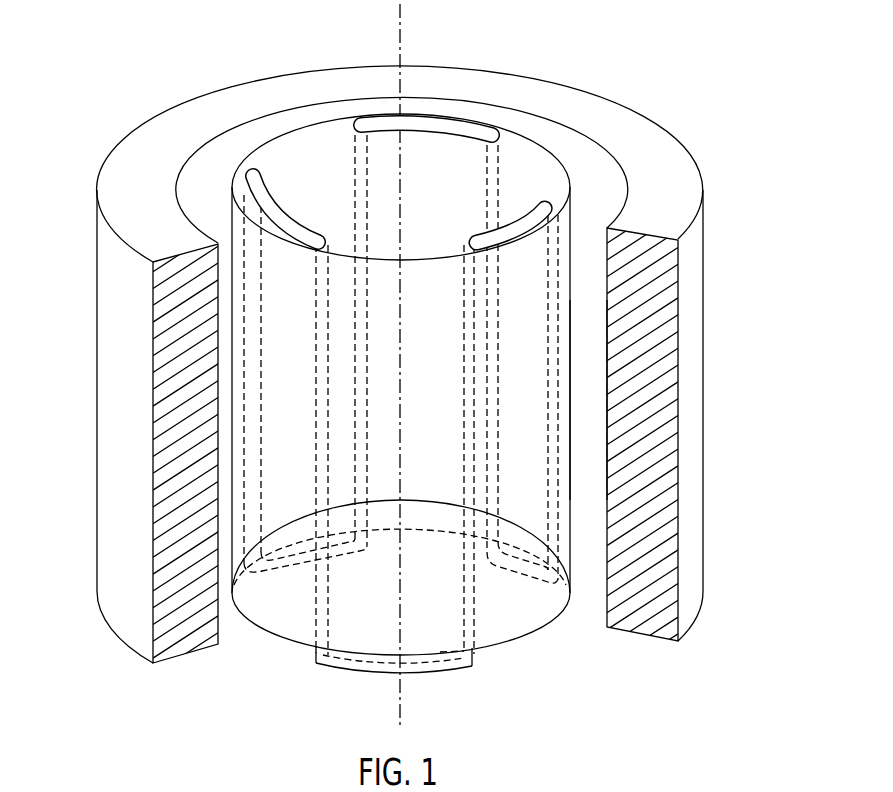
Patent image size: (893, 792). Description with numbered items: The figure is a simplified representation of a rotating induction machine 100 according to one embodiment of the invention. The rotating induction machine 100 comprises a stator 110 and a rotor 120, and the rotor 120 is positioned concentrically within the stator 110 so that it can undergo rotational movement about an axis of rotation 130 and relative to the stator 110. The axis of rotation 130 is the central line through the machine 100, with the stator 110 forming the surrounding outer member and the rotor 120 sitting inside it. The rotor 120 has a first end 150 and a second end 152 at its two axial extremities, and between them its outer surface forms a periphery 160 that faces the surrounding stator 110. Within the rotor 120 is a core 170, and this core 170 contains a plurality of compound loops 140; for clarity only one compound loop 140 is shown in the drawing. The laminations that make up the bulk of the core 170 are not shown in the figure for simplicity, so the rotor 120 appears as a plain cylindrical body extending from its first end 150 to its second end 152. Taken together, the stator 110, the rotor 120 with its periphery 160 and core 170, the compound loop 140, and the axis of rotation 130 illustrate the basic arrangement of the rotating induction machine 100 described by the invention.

The rotating induction machine 100 is at (175, 62).
The stator 110 is at (113, 652).
The rotor 120 is at (272, 665).
The axis of rotation 130 is at (402, 52).
The compound loops 140 is at (386, 674).
The first end 150 is at (570, 198).
The second end 152 is at (556, 618).
The periphery 160 is at (572, 408).
The core 170 is at (525, 185).